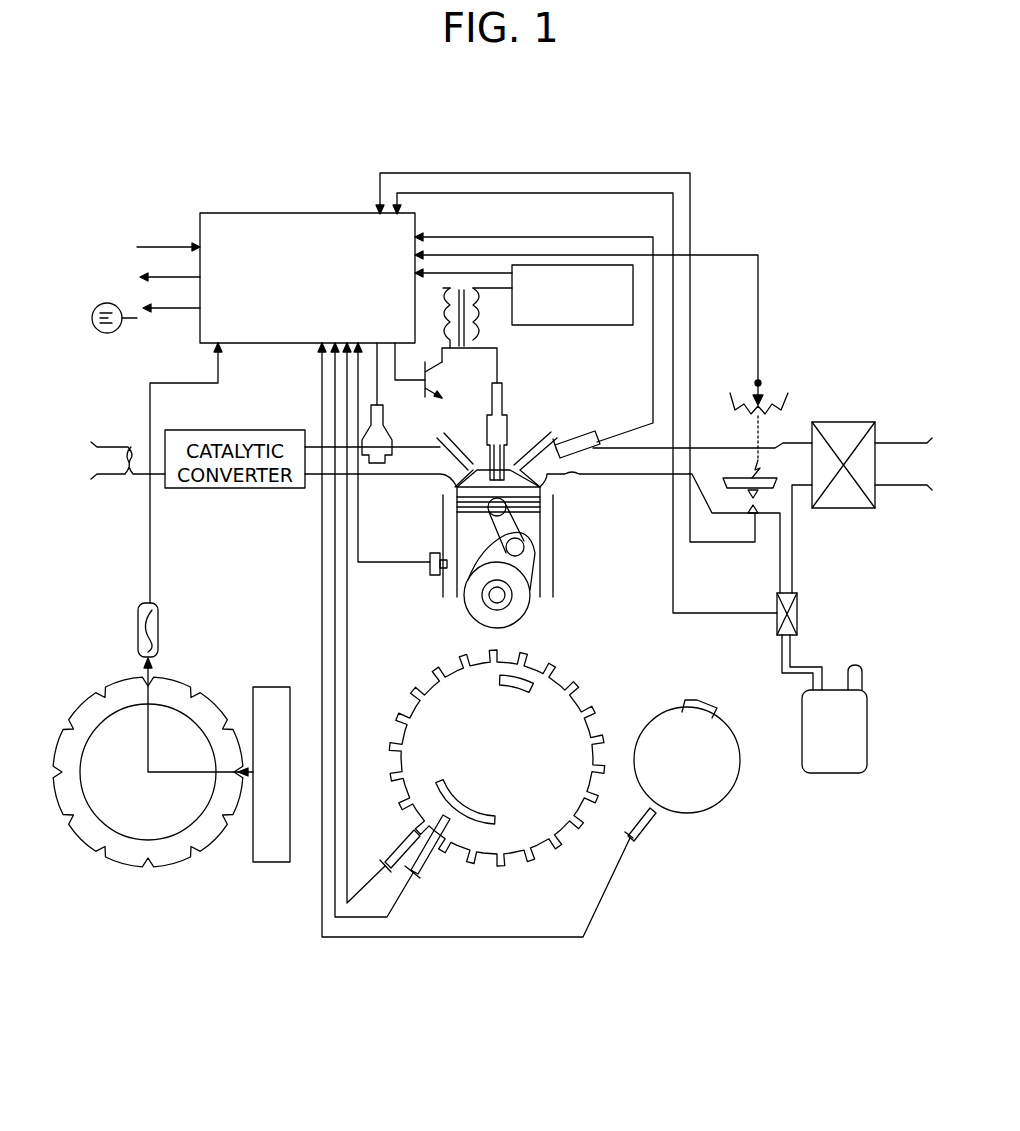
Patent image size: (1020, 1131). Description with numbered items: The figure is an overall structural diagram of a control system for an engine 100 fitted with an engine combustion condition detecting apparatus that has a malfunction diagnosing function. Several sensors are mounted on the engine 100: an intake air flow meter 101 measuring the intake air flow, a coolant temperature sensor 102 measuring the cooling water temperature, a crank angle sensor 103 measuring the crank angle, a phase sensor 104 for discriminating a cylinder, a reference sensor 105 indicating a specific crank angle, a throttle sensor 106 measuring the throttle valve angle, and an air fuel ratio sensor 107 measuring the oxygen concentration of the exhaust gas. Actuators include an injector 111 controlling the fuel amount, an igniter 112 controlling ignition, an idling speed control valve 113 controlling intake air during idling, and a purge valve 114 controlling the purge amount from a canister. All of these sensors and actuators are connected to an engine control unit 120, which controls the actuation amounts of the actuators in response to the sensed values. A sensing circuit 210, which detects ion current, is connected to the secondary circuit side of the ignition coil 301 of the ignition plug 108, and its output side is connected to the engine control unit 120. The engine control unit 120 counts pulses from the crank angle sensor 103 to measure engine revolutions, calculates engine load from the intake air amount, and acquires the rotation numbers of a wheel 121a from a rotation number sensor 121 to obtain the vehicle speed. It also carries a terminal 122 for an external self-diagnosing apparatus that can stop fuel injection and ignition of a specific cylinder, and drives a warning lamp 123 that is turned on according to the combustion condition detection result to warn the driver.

The engine 100 is at (718, 160).
The intake air flow meter 101 is at (843, 422).
The coolant temperature sensor 102 is at (400, 562).
The crank angle sensor 103 is at (380, 850).
The phase sensor 104 is at (640, 845).
The reference sensor 105 is at (425, 878).
The throttle sensor 106 is at (758, 383).
The air fuel ratio sensor 107 is at (392, 432).
The ignition plug 108 is at (507, 425).
The injector 111 is at (586, 428).
The igniter 112 is at (457, 384).
The idling speed control valve 113 is at (715, 542).
The purge valve 114 is at (797, 613).
The engine control unit 120 is at (290, 213).
The rotation number sensor 121 is at (158, 625).
The wheel 121a is at (145, 865).
The terminal of external self-diagnosing apparatus 122 is at (176, 277).
The warning lamp 123 is at (175, 308).
The sensing circuit 210 is at (566, 265).
The ignition coil 301 is at (473, 336).